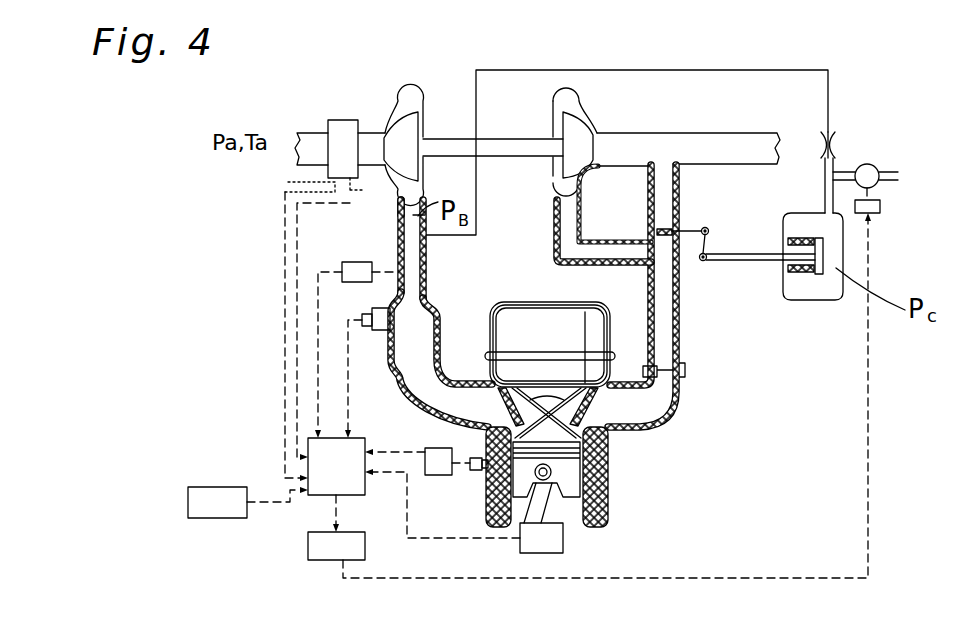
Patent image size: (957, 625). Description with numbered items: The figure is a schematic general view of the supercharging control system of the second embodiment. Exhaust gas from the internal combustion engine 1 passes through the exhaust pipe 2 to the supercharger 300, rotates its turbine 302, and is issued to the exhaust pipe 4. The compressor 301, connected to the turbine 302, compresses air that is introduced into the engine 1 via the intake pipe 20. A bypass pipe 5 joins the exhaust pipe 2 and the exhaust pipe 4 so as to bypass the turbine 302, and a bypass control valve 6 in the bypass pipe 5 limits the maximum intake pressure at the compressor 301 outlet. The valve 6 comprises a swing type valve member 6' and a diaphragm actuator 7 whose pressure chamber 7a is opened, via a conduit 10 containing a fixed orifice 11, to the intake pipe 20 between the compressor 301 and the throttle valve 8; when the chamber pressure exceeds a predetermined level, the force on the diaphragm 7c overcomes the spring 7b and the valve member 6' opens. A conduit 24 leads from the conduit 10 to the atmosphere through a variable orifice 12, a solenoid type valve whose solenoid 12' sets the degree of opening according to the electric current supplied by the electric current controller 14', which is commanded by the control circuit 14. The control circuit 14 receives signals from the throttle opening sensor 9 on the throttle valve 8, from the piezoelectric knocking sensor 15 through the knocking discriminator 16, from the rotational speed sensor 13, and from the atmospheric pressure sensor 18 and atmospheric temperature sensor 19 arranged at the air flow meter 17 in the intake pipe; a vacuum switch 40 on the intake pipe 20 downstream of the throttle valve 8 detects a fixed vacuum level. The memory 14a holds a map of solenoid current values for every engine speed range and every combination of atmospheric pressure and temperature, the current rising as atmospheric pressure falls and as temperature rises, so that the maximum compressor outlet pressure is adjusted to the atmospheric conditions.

The internal combustion engine 1 is at (565, 307).
The exhaust pipe 2 is at (680, 322).
The exhaust pipe 4 is at (692, 142).
The bypass pipe 5 is at (660, 180).
The bypass control valve 6 is at (727, 218).
The swing type valve member 6' is at (690, 217).
The diaphragm actuator 7 is at (792, 302).
The pressure chamber 7a is at (832, 292).
The spring 7b is at (795, 268).
The diaphragm 7c is at (827, 300).
The throttle valve 8 is at (425, 277).
The throttle opening sensor 9 is at (352, 262).
The conduit 10 is at (690, 70).
The fixed orifice 11 is at (832, 146).
The variable orifice 12 is at (883, 157).
The solenoid 12' is at (898, 217).
The rotational speed sensor 13 is at (563, 546).
The control circuit 14 is at (325, 367).
The electric current controller 14' is at (576, 414).
The memory 14a is at (210, 518).
The piezoelectric type knocking sensor 15 is at (478, 470).
The knocking discriminator 16 is at (443, 476).
The air flow meter 17 is at (343, 130).
The atmospheric pressure sensor 18 is at (384, 215).
The atmospheric temperature sensor 19 is at (311, 323).
The intake pipe 20 is at (432, 292).
The conduit 24 is at (900, 177).
The vacuum switch 40 is at (376, 332).
The supercharger 300 is at (542, 127).
The compressor 301 is at (403, 147).
The turbine 302 is at (578, 148).